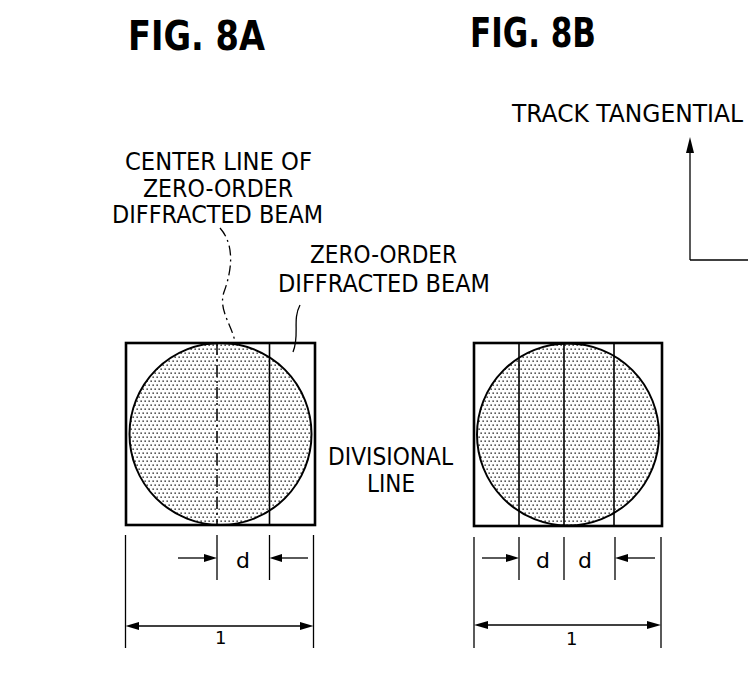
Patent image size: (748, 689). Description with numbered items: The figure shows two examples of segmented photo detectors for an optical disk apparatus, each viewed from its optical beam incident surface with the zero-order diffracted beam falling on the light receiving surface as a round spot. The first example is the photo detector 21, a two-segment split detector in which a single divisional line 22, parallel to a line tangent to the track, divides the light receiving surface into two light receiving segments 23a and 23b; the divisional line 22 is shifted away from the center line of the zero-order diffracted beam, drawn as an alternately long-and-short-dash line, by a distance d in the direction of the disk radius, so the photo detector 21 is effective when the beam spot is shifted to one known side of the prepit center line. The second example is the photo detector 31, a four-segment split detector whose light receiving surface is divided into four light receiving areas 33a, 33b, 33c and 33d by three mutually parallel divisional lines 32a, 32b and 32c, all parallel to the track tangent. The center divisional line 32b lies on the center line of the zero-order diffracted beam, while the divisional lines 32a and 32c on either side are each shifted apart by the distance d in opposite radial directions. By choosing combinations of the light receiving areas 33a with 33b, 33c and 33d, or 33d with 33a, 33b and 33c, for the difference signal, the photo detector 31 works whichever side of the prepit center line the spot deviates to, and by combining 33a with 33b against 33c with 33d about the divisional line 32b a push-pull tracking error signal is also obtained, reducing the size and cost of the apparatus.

In FIG. 8A, the photo detector 21 is at (116, 488).
In FIG. 8A, the divisional line 22 is at (270, 438).
In FIG. 8A, the light receiving segment 23a is at (302, 362).
In FIG. 8A, the light receiving segment 23b is at (138, 373).
In FIG. 8B, the photo detector 31 is at (462, 468).
In FIG. 8B, the divisional line 32a is at (615, 381).
In FIG. 8B, the center divisional line 32b is at (568, 383).
In FIG. 8B, the divisional line 32c is at (523, 367).
In FIG. 8B, the light receiving area 33a is at (635, 435).
In FIG. 8B, the light receiving area 33b is at (588, 479).
In FIG. 8B, the light receiving area 33c is at (533, 483).
In FIG. 8B, the light receiving area 33d is at (497, 405).